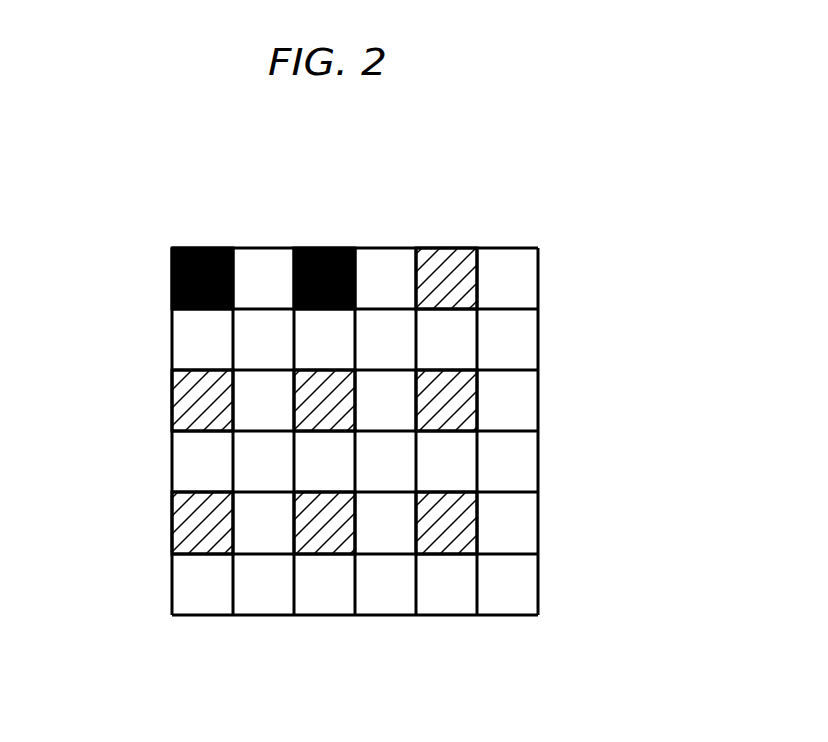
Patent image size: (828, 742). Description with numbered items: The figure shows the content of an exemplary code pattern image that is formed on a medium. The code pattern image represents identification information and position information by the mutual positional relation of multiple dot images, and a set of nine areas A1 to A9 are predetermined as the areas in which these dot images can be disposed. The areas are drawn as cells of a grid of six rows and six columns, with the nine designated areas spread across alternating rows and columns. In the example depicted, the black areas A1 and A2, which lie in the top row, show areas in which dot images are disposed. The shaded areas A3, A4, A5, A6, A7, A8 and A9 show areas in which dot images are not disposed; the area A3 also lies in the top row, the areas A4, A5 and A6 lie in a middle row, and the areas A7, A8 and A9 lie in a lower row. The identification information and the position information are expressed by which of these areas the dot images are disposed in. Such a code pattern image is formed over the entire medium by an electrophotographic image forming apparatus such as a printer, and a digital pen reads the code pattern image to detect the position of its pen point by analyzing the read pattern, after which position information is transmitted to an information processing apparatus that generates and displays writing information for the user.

The area A1 is at (207, 249).
The area A2 is at (333, 248).
The area A3 is at (448, 251).
The area A4 is at (182, 398).
The area A5 is at (333, 390).
The area A6 is at (462, 415).
The area A7 is at (193, 543).
The area A8 is at (317, 543).
The area A9 is at (442, 543).